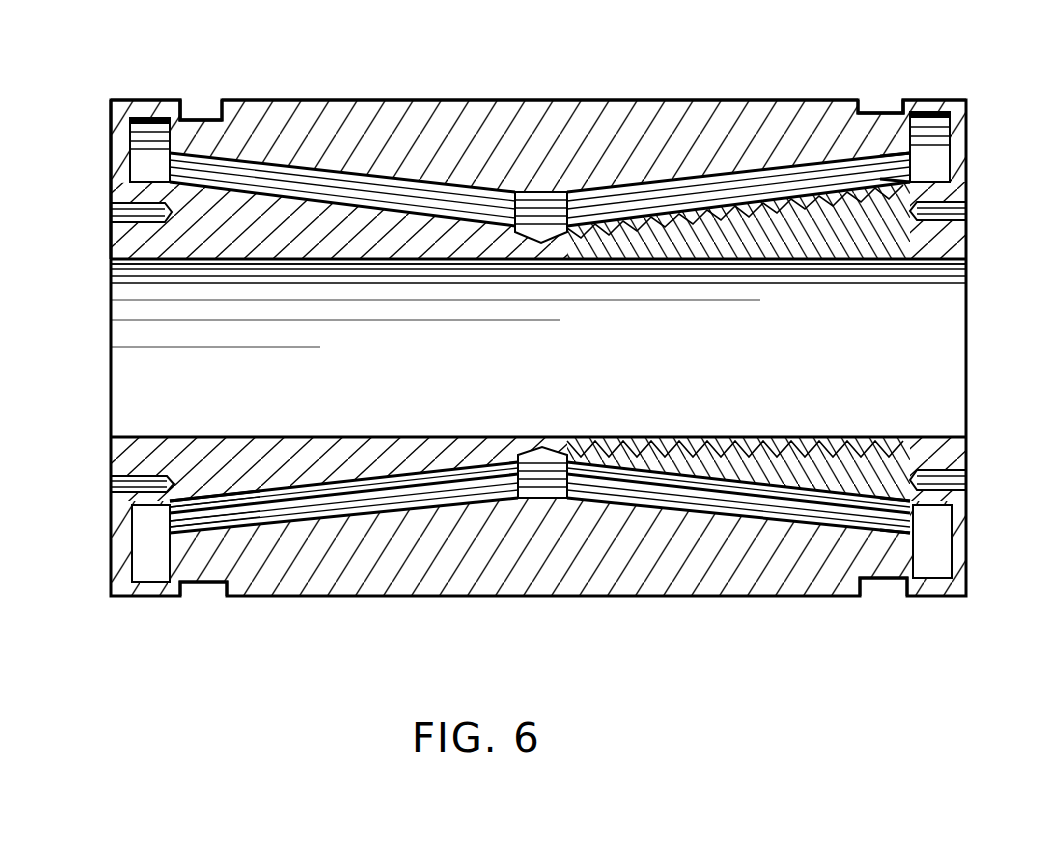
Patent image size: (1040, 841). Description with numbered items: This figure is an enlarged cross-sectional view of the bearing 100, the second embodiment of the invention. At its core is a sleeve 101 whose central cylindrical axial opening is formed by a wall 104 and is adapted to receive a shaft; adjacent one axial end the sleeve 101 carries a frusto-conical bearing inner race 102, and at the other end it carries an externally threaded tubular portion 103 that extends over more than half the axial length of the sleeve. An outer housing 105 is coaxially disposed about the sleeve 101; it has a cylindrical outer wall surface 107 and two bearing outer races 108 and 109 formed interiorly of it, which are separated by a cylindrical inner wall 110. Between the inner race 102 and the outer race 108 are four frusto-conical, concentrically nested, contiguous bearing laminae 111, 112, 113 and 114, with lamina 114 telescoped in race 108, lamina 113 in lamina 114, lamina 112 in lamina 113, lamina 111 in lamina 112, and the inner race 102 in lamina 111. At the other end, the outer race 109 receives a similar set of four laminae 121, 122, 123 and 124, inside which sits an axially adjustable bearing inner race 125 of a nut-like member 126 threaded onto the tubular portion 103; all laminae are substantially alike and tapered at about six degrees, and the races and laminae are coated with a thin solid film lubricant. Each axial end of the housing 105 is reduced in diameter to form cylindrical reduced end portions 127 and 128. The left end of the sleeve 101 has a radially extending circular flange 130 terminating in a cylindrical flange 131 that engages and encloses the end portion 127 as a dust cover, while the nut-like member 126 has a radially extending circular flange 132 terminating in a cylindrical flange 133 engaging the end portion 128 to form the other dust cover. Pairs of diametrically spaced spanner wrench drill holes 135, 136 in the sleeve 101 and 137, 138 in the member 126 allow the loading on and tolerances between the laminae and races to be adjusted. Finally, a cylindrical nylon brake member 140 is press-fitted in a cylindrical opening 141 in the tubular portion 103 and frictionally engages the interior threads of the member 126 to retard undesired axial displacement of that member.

The bearing 100 is at (532, 98).
The sleeve 101 is at (127, 250).
The bearing inner race 102 is at (132, 182).
The externally threaded tubular portion 103 is at (950, 248).
The wall 104 is at (122, 262).
The outer housing 105 is at (780, 68).
The cylindrical outer wall surface 107 is at (688, 65).
The bearing outer race 108 is at (333, 172).
The bearing outer race 109 is at (905, 162).
The cylindrical inner wall 110 is at (558, 470).
The bearing lamina 111 is at (170, 504).
The bearing lamina 112 is at (170, 512).
The bearing lamina 113 is at (170, 521).
The bearing lamina 114 is at (170, 529).
The bearing lamina 121 is at (600, 466).
The bearing lamina 122 is at (655, 480).
The bearing lamina 123 is at (722, 497).
The bearing lamina 124 is at (792, 514).
The axially adjustable bearing inner race 125 is at (935, 178).
The nut-like member 126 is at (895, 483).
The cylindrical reduced end portion 127 is at (198, 112).
The cylindrical reduced end portion 128 is at (870, 112).
The radially extending circular flange 130 is at (112, 143).
The cylindrical flange 131 is at (162, 62).
The radially extending circular flange 132 is at (962, 156).
The right end flange 133 is at (950, 66).
The spanner wrench drill hole 135 is at (112, 212).
The spanner wrench drill hole 136 is at (128, 492).
The spanner wrench drill hole 137 is at (955, 208).
The spanner wrench drill hole 138 is at (955, 478).
The cylindrical nylon brake member 140 is at (915, 260).
The cylindrical opening 141 is at (950, 222).